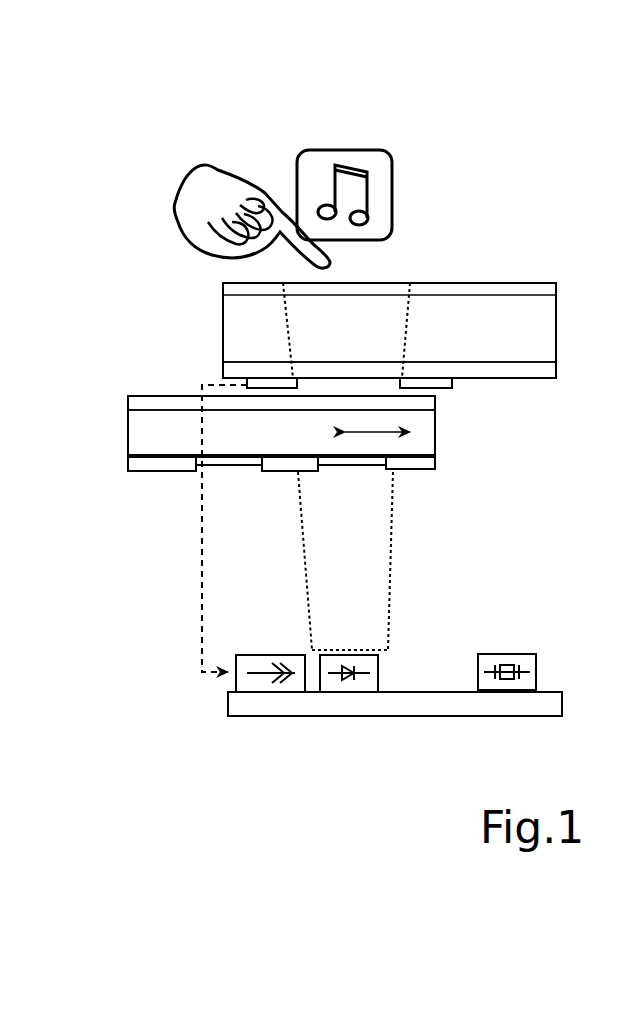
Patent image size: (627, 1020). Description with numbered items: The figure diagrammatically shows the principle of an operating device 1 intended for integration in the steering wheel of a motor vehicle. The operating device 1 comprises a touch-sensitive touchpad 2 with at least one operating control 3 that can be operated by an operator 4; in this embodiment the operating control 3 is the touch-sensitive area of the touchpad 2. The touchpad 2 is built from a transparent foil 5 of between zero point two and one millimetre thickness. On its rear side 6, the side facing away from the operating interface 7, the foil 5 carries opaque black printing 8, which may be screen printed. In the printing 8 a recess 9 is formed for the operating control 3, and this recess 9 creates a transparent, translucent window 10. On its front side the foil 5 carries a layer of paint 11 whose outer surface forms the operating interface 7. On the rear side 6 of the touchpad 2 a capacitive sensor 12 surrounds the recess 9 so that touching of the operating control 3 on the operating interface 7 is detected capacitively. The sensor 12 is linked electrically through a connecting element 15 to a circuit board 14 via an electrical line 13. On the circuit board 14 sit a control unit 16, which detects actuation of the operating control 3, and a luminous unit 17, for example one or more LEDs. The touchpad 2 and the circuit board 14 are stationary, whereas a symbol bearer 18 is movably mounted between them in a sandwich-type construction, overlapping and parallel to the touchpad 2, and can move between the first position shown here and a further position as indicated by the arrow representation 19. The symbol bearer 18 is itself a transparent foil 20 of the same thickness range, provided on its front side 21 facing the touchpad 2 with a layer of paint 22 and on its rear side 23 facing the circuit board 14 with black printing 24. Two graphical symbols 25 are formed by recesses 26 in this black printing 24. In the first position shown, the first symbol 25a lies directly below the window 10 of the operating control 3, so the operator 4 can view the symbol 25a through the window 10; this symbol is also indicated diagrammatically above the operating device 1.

The operating device 1 is at (100, 205).
The touchpad 2 is at (512, 272).
The operating control 3 is at (402, 282).
The operator 4 is at (229, 190).
The transparent foil 5 is at (557, 330).
The rear side 6 is at (539, 387).
The operating interface 7 is at (478, 282).
The black printing 8 is at (493, 379).
The recess 9 is at (304, 378).
The window 10 is at (385, 347).
The layer of paint 11 is at (548, 283).
The capacitive sensor 12 is at (447, 389).
The electrical line 13 is at (204, 571).
The circuit board 14 is at (455, 718).
The connecting element 15 is at (268, 655).
The control unit 16 is at (510, 654).
The luminous unit 17 is at (378, 673).
The symbol bearer 18 is at (137, 420).
The arrow representation 19 is at (400, 458).
The transparent foil 20 is at (135, 450).
The front side 21 is at (163, 392).
The layer of paint 22 is at (137, 403).
The rear side 23 is at (165, 482).
The black printing 24 is at (140, 470).
The graphical symbols 25 is at (342, 472).
The first symbol 25a is at (369, 150).
The recesses 26 is at (198, 471).